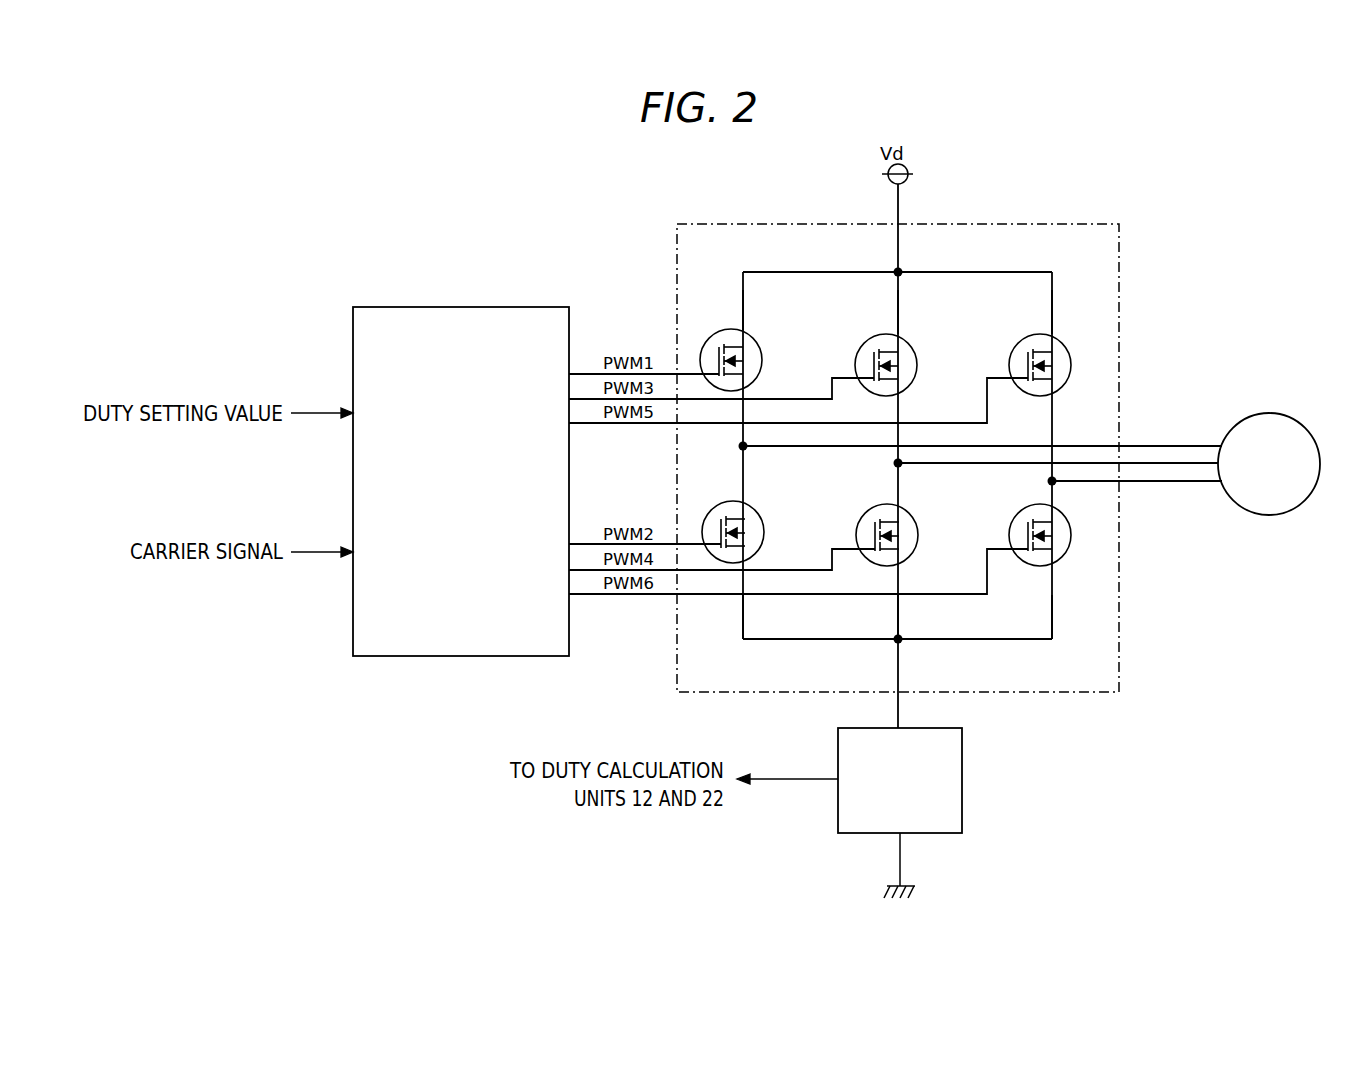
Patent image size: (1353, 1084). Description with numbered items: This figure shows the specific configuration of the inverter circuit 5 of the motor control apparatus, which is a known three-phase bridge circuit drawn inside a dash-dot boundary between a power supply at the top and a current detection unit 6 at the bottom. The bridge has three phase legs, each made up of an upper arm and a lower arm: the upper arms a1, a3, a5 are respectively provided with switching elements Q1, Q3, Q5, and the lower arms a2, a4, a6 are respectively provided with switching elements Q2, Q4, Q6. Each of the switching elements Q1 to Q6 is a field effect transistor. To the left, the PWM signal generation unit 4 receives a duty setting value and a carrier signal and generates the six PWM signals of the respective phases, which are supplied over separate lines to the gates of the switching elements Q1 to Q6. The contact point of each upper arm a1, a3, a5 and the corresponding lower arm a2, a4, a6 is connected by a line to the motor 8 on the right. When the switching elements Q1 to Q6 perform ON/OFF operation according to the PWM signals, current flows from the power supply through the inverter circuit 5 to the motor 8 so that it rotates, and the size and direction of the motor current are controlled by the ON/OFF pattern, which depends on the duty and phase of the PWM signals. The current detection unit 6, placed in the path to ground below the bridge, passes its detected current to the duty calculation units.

The PWM signal generation unit 4 is at (473, 306).
The inverter circuit 5 is at (995, 223).
The current detection unit 6 is at (966, 780).
The motor 8 is at (1269, 410).
The switching element Q1 is at (747, 360).
The switching element Q2 is at (748, 532).
The switching element Q3 is at (902, 365).
The switching element Q4 is at (902, 535).
The switching element Q5 is at (1056, 365).
The switching element Q6 is at (1056, 535).
The upper arm a1 is at (748, 311).
The lower arm a2 is at (748, 612).
The upper arm a3 is at (903, 311).
The lower arm a4 is at (903, 612).
The upper arm a5 is at (1057, 311).
The lower arm a6 is at (1057, 612).